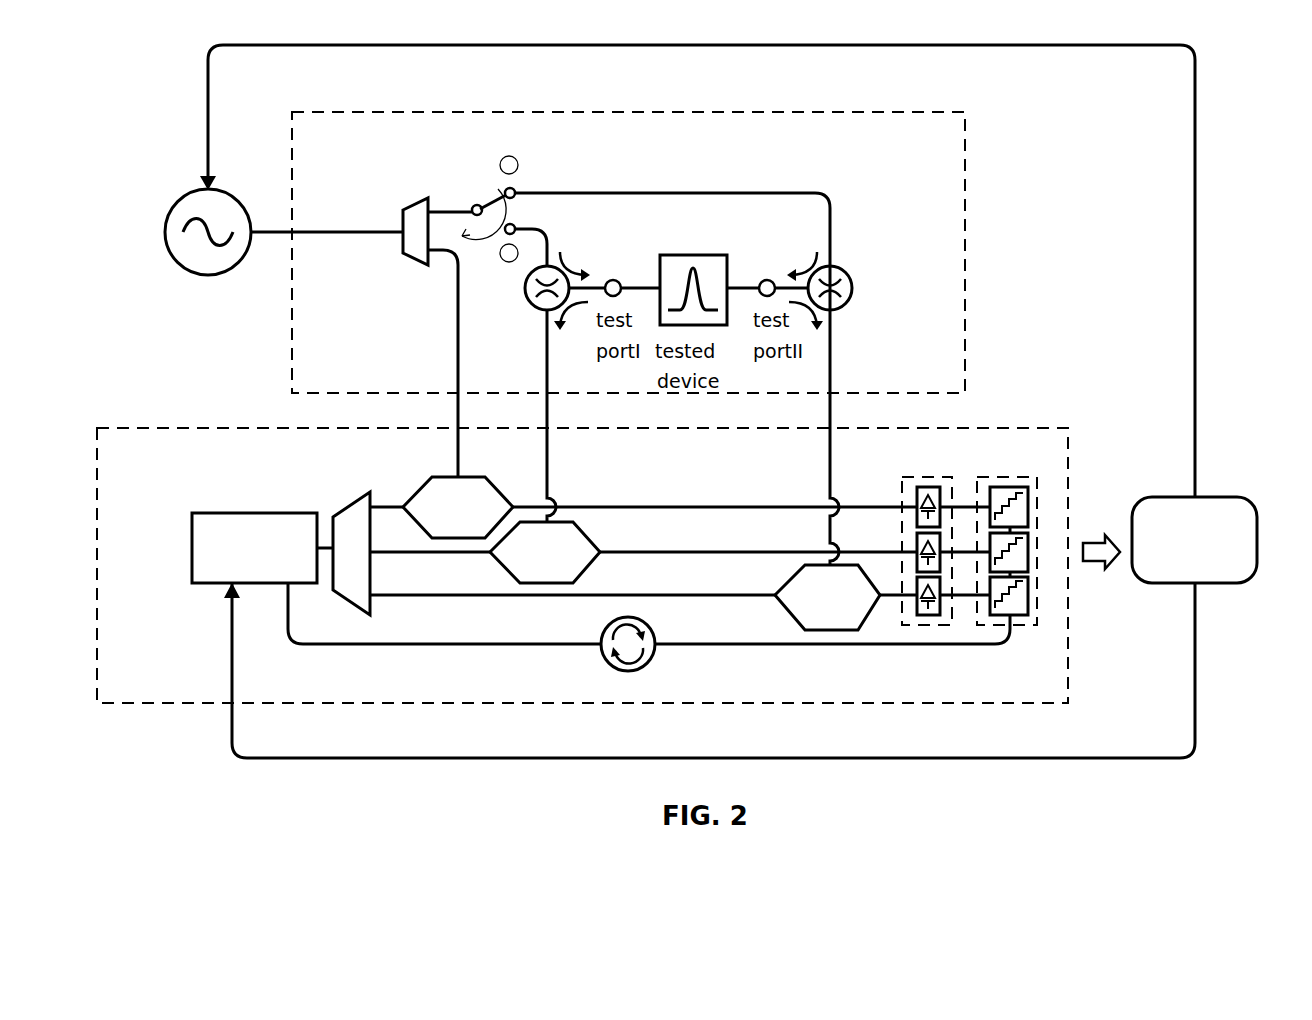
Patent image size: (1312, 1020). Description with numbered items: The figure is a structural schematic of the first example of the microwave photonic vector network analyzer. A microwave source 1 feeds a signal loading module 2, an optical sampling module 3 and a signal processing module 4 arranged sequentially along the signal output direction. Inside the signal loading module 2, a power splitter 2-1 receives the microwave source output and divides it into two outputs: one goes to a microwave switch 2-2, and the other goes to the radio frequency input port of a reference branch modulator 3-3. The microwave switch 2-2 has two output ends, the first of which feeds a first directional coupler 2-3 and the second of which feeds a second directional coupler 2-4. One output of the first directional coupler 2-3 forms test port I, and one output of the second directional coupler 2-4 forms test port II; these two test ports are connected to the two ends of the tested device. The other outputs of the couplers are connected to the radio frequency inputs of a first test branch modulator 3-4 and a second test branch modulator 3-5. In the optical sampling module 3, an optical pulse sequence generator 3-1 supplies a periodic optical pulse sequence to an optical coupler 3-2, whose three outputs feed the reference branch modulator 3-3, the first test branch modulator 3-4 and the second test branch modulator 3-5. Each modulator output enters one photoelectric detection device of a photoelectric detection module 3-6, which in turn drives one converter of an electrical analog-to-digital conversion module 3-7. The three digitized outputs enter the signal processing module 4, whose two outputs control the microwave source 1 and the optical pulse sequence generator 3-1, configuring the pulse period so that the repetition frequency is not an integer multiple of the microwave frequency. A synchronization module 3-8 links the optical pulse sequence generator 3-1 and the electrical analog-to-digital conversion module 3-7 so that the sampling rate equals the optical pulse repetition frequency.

The microwave source 1 is at (170, 250).
The signal loading module 2 is at (965, 343).
The power splitter 2-1 is at (410, 260).
The microwave switch 2-2 is at (488, 203).
The first directional coupler 2-3 is at (537, 310).
The second directional coupler 2-4 is at (852, 302).
The optical sampling module 3 is at (1068, 672).
The optical pulse sequence generator 3-1 is at (200, 584).
The optical coupler 3-2 is at (350, 504).
The reference branch modulator 3-3 is at (418, 490).
The first test branch modulator 3-4 is at (590, 567).
The second test branch modulator 3-5 is at (788, 610).
The photoelectric detection module 3-6 is at (908, 628).
The electrical analog-to-digital conversion module 3-7 is at (1025, 628).
The synchronization module 3-8 is at (603, 662).
The signal processing module 4 is at (1242, 584).